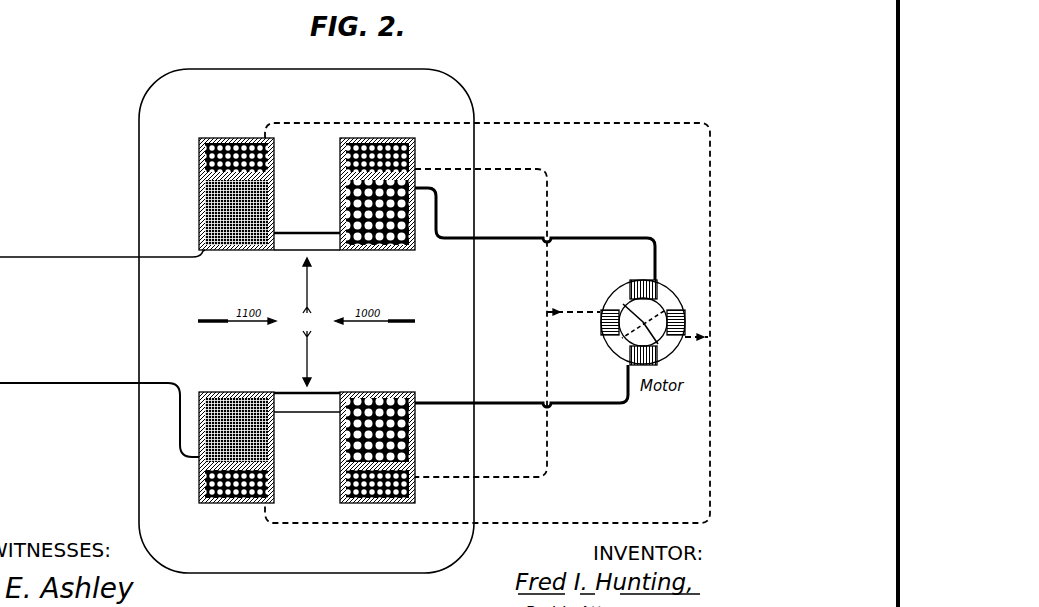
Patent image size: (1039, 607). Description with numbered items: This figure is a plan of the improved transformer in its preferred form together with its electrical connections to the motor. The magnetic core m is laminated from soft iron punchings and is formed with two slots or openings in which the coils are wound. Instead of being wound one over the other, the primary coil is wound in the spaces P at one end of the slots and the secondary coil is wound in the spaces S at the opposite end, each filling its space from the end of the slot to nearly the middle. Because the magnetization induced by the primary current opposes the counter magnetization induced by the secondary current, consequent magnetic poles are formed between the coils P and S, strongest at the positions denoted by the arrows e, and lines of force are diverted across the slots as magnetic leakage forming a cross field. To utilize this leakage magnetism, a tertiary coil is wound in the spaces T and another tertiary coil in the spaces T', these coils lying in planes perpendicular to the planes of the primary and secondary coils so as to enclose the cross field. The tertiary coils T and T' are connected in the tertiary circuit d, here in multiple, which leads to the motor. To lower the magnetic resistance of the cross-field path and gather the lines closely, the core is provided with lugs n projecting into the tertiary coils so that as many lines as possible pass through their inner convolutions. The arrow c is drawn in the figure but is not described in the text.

The primary coil spaces P is at (238, 391).
The secondary coil spaces S is at (382, 391).
The tertiary coil T is at (307, 157).
The tertiary coil T' is at (307, 484).
The lugs n is at (307, 322).
The arrows denoting consequent poles e is at (312, 285).
The direction arrow (lower) c is at (299, 358).
The magnetic core m is at (306, 321).
The tertiary circuit d is at (487, 323).